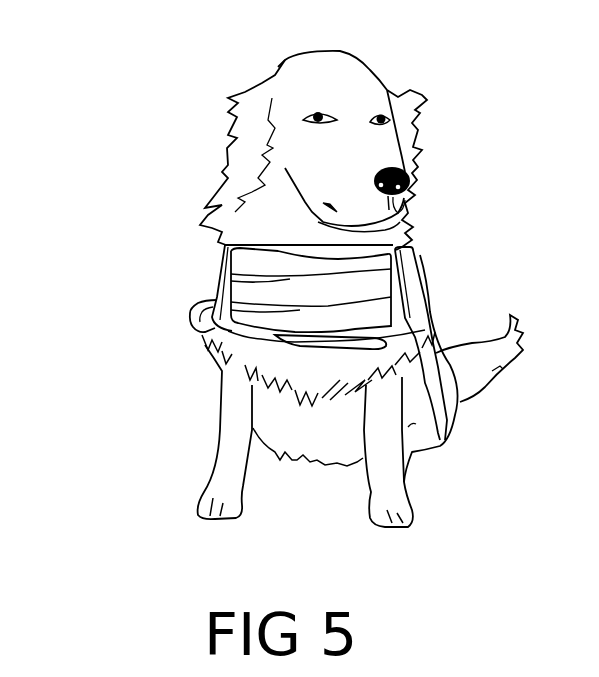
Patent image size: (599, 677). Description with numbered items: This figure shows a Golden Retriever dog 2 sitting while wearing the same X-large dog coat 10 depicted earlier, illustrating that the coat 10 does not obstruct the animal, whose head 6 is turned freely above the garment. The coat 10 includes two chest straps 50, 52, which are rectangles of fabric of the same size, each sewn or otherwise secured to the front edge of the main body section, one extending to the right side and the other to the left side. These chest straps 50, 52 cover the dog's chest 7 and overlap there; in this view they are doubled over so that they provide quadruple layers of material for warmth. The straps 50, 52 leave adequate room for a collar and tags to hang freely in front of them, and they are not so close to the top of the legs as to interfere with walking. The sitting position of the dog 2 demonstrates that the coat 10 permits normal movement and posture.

The dog 2 is at (172, 170).
The head 6 is at (298, 76).
The chest 7 is at (253, 353).
The coat 10 is at (430, 258).
The chest strap 50 is at (253, 287).
The chest strap 52 is at (367, 337).